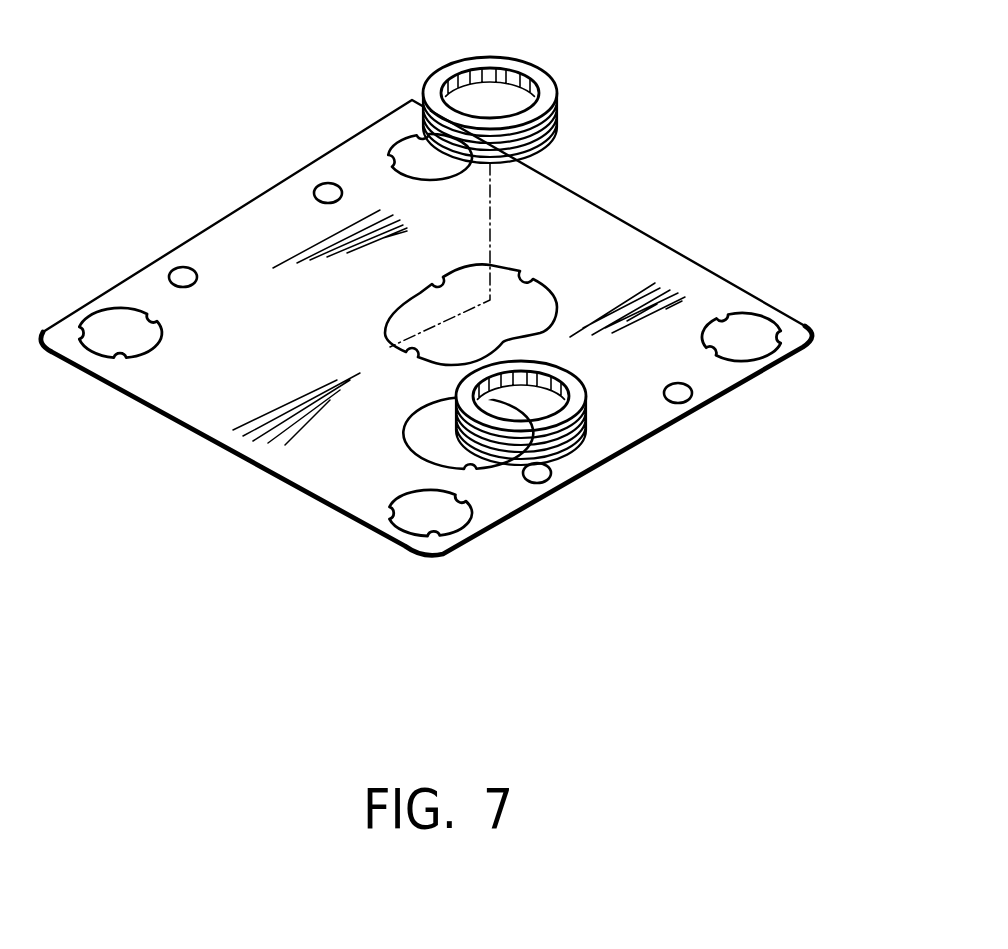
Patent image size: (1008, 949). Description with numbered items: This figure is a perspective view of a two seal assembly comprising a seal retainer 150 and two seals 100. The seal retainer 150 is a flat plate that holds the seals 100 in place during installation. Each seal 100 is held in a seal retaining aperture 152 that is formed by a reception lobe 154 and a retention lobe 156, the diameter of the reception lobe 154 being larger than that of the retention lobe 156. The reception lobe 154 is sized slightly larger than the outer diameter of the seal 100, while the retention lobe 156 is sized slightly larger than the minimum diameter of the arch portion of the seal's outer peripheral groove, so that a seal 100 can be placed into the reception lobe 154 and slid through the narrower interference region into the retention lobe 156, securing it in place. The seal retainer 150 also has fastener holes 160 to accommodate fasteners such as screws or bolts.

The seal 100 is at (500, 68).
The seal retainer 150 is at (622, 250).
The seal retaining aperture 152 is at (452, 272).
The reception lobe 154 is at (500, 262).
The retention lobe 156 is at (410, 350).
The fastener holes 160 is at (750, 327).